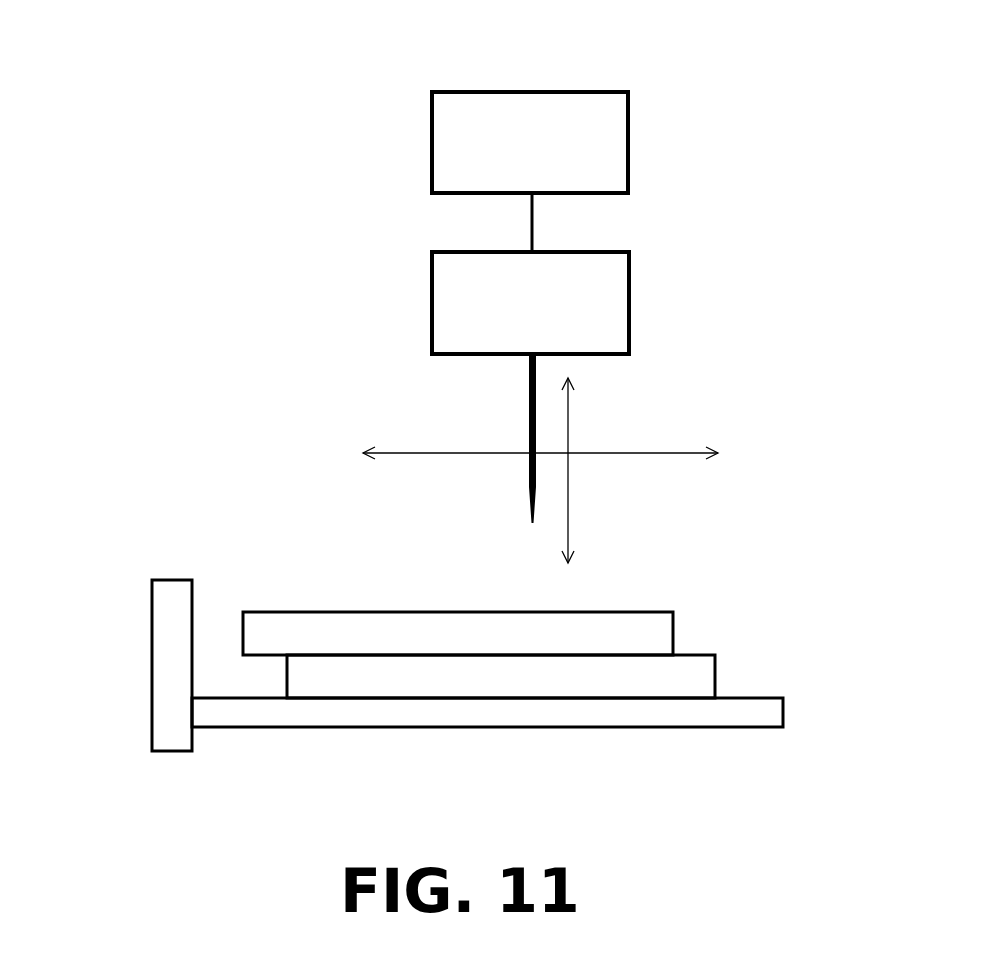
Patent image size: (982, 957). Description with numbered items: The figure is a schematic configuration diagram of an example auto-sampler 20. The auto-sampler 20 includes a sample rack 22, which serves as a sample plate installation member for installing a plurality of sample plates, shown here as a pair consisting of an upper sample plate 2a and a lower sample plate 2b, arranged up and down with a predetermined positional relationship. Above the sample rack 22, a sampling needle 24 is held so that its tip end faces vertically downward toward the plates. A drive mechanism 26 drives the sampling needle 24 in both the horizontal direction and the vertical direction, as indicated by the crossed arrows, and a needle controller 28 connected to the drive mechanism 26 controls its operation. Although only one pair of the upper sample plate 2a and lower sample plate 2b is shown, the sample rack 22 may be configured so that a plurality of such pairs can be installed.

The auto-sampler 20 is at (232, 215).
The sample rack 22 is at (150, 634).
The sampling needle 24 is at (527, 410).
The drive mechanism 26 is at (631, 258).
The needle controller 28 is at (603, 90).
The upper sample plate 2a is at (675, 622).
The lower sample plate 2b is at (717, 668).